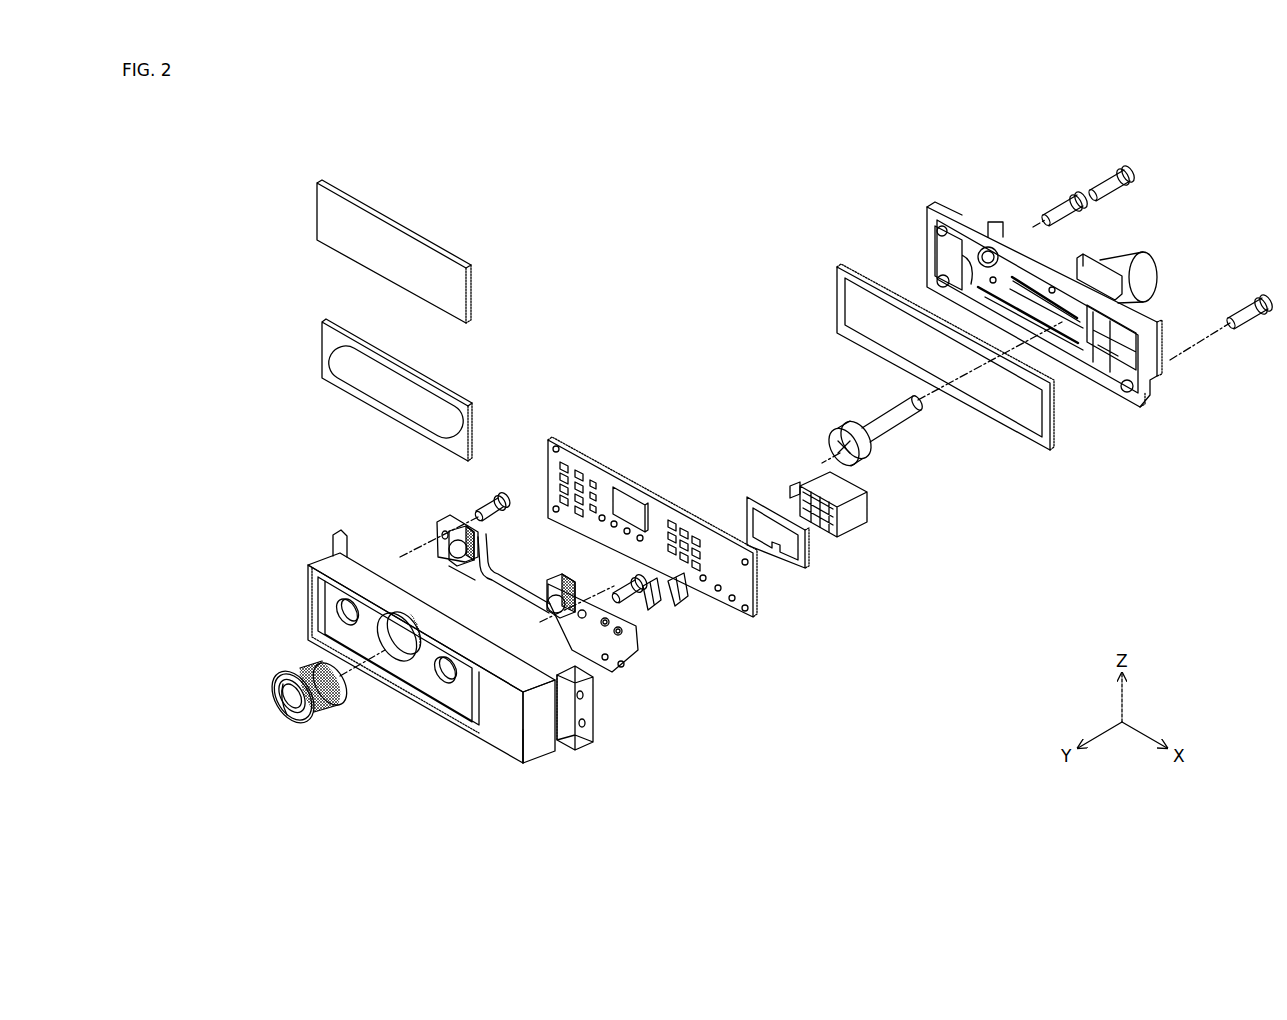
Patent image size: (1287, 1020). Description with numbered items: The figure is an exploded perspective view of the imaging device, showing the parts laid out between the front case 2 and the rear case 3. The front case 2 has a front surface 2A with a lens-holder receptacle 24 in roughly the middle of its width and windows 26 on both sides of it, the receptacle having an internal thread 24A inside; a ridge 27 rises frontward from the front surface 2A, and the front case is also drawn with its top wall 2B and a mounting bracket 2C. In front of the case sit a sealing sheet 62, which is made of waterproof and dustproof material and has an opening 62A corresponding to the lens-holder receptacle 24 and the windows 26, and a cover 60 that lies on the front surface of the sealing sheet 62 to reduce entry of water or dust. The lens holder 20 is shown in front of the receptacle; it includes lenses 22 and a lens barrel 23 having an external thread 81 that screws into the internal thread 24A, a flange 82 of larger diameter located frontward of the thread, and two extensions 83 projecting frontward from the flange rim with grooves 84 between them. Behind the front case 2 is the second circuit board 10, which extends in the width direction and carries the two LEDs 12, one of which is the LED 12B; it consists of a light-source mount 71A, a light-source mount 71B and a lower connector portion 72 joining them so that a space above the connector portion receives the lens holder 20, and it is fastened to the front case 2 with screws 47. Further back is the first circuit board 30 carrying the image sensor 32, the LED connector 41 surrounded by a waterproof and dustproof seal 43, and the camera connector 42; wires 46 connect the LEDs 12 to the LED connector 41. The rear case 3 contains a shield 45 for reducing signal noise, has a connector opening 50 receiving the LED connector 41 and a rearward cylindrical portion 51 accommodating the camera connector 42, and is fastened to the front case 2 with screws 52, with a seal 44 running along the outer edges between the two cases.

The front case 2 is at (449, 645).
The front surface 2A is at (330, 604).
The top wall 2B is at (368, 550).
The mounting bracket 2C is at (545, 755).
The rear case 3 is at (1099, 292).
The second circuit board 10 is at (533, 595).
The LEDs 12 is at (445, 525).
The LED 12B is at (560, 580).
The lens holder 20 is at (281, 717).
The lens 22 is at (292, 710).
The lens barrel 23 is at (283, 667).
The lens-holder receptacle 24 is at (347, 678).
The internal thread 24A is at (400, 660).
The windows 26 is at (342, 618).
The ridge 27 is at (500, 700).
The first circuit board 30 is at (652, 551).
The image sensor 32 is at (630, 490).
The LED connector 41 is at (850, 548).
The camera connector 42 is at (895, 440).
The seal 43 is at (810, 555).
The seal 44 is at (995, 435).
The shield 45 is at (1065, 365).
The wires 46 is at (646, 616).
The screws 47 is at (495, 490).
The connector opening 50 is at (1100, 385).
The cylindrical portion 51 is at (1148, 270).
The screws 52 is at (1062, 205).
The cover 60 is at (355, 240).
The sealing sheet 62 is at (415, 390).
The opening 62A is at (372, 385).
The light-source mount 71A is at (440, 516).
The light-source mount 71B is at (570, 632).
The connector portion 72 is at (500, 595).
The external thread 81 is at (333, 707).
The flange 82 is at (318, 712).
The extensions 83 is at (285, 690).
The grooves 84 is at (287, 727).